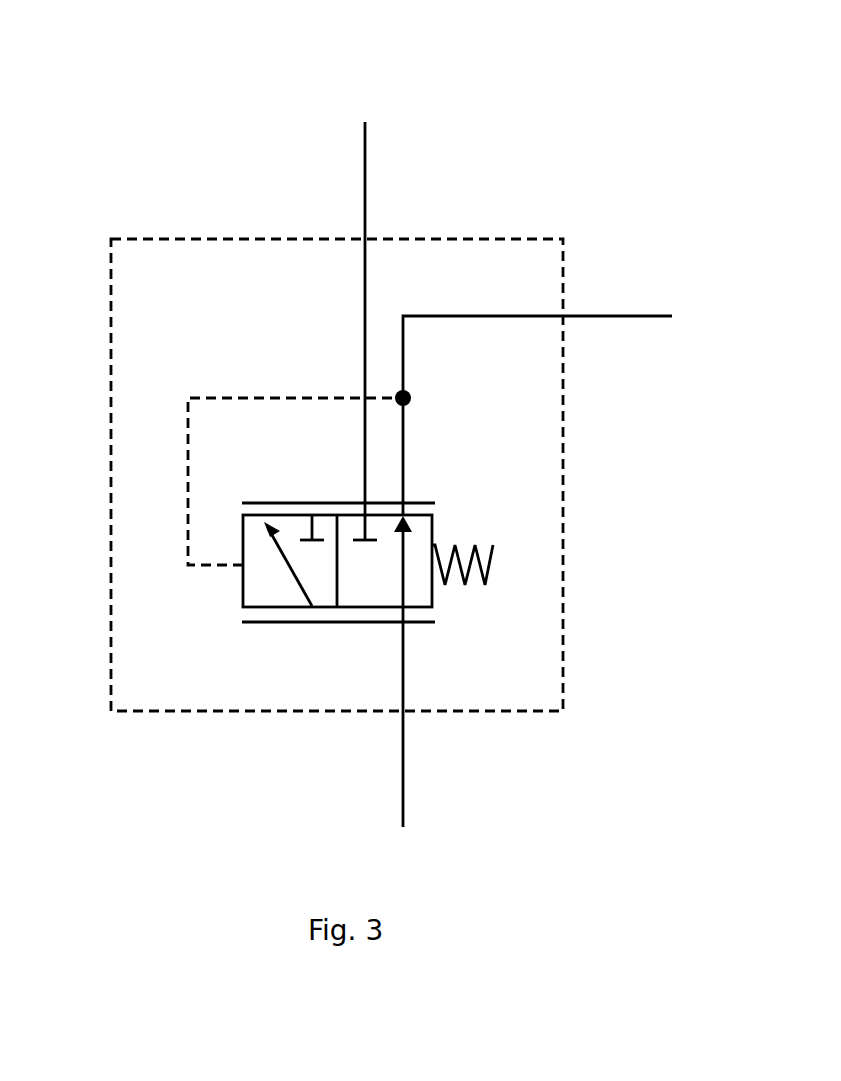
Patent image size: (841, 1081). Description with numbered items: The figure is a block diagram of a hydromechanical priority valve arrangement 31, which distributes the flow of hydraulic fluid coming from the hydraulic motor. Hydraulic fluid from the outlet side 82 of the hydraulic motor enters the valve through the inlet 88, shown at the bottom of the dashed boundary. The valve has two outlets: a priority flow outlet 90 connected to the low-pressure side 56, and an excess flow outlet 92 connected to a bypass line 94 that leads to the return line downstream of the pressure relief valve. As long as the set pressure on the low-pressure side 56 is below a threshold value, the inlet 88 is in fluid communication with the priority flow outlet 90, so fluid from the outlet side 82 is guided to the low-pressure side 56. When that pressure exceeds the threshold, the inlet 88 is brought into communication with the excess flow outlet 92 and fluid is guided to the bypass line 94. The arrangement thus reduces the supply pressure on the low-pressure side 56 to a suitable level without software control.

The valve assembly 31 is at (110, 92).
The bypass line 94 is at (363, 135).
The excess flow outlet 92 is at (363, 238).
The priority flow outlet 90 is at (567, 316).
The low-pressure side 56 is at (657, 316).
The inlet 88 is at (400, 711).
The outlet side 82 is at (400, 815).